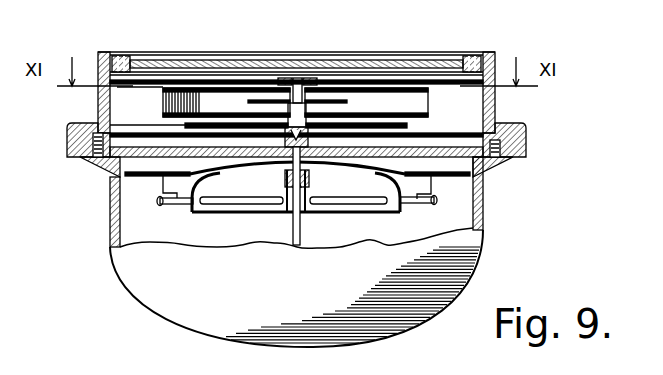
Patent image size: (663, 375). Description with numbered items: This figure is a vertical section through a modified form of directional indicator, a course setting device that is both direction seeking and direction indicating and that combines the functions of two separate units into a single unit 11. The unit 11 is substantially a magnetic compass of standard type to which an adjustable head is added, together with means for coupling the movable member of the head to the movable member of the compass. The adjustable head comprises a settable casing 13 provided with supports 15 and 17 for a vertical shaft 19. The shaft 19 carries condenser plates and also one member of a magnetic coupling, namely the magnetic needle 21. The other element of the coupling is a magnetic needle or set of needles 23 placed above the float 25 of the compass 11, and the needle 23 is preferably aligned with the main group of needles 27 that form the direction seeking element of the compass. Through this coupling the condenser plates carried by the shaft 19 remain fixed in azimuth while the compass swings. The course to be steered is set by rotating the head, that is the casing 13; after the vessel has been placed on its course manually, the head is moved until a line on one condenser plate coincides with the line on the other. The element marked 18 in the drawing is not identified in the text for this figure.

The unit 11 is at (487, 203).
The settable casing 13 is at (98, 106).
The support 15 is at (313, 77).
The support 17 is at (317, 162).
The plate 18 is at (345, 103).
The vertical shaft 19 is at (290, 96).
The magnetic needle 21 is at (408, 126).
The magnetic needle 23 is at (403, 167).
The float 25 is at (233, 168).
The main group of needles 27 is at (182, 203).